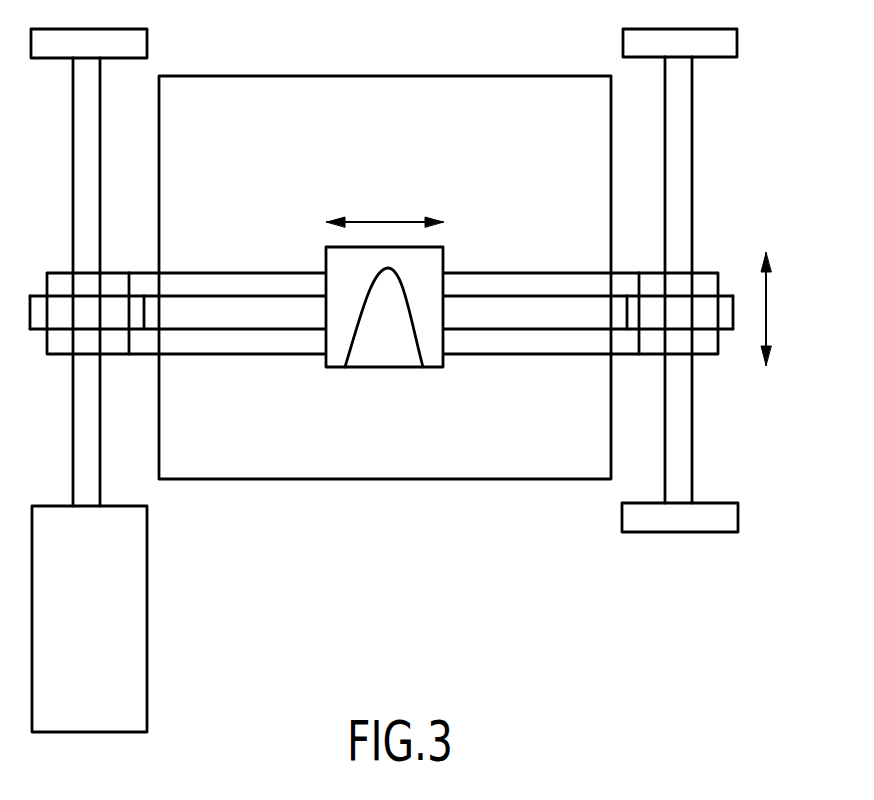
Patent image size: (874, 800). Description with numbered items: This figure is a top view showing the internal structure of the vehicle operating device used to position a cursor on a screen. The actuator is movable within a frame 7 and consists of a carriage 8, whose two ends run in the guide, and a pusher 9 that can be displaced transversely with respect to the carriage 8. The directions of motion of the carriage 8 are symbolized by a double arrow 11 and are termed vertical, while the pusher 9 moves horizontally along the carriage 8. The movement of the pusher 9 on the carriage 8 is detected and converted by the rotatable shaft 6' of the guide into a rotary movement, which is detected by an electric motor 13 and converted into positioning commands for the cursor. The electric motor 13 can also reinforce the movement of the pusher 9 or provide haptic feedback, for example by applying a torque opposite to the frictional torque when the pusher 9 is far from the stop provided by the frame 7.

The rotatable shaft 6' is at (393, 280).
The frame 7 is at (159, 200).
The carriage 8 is at (243, 345).
The pusher 9 is at (420, 322).
The double arrow 11 is at (768, 305).
The electric motor 13 is at (135, 560).